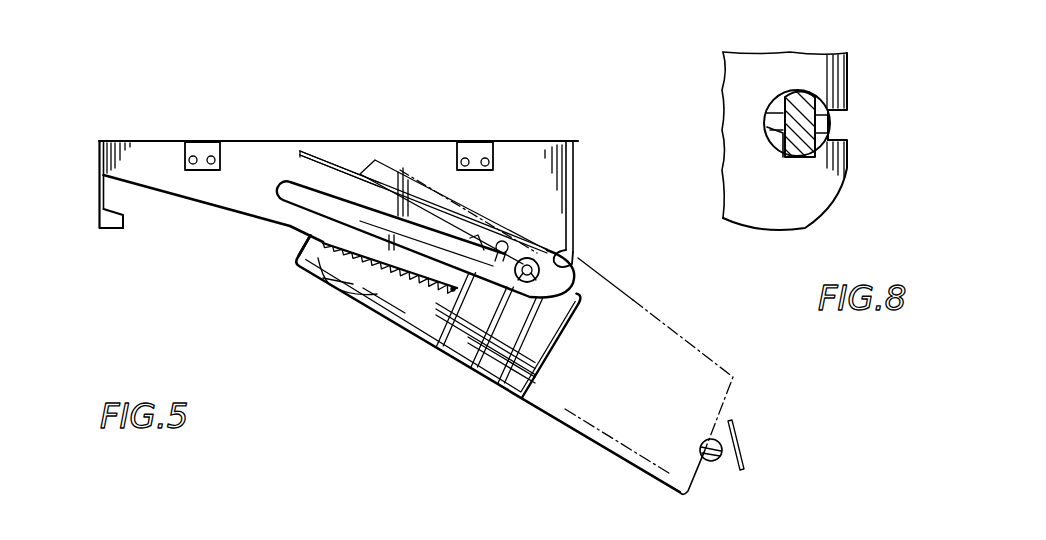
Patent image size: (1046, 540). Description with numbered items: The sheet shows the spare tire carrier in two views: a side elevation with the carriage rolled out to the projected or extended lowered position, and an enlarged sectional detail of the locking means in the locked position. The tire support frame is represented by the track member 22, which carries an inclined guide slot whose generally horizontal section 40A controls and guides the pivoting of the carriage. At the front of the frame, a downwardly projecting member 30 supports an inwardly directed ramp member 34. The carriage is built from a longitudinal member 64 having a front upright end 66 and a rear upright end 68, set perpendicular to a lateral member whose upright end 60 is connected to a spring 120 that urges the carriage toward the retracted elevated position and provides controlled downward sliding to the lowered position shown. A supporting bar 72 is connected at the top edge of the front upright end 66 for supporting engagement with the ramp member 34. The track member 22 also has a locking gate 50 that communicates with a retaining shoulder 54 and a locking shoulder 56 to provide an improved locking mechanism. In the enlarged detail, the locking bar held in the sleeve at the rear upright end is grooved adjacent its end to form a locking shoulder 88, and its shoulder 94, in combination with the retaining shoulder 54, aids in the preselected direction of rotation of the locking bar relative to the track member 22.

In FIG. 5, the track member 22 is at (233, 150).
In FIG. 5, the downwardly projecting member 30 is at (99, 187).
In FIG. 5, the ramp member 34 is at (112, 232).
In FIG. 5, the horizontal section 40A is at (290, 198).
In FIG. 5, the supporting bar 72 is at (338, 164).
In FIG. 5, the locking gate 50 is at (570, 257).
In FIG. 8, the locking gate 50 is at (837, 125).
In FIG. 5, the upright end 60 is at (493, 365).
In FIG. 5, the front upright end 66 is at (296, 249).
In FIG. 5, the spring 120 is at (380, 290).
In FIG. 5, the longitudinal member 64 is at (584, 447).
In FIG. 5, the rear upright end 68 is at (690, 474).
In FIG. 8, the locking shoulder 88 is at (831, 200).
In FIG. 8, the retaining shoulder 54 is at (762, 125).
In FIG. 8, the shoulder 94 is at (774, 96).
In FIG. 8, the locking shoulder 56 is at (802, 92).